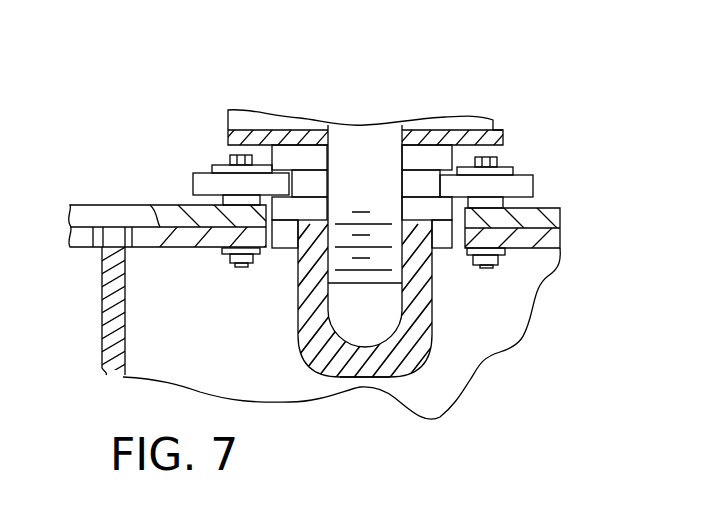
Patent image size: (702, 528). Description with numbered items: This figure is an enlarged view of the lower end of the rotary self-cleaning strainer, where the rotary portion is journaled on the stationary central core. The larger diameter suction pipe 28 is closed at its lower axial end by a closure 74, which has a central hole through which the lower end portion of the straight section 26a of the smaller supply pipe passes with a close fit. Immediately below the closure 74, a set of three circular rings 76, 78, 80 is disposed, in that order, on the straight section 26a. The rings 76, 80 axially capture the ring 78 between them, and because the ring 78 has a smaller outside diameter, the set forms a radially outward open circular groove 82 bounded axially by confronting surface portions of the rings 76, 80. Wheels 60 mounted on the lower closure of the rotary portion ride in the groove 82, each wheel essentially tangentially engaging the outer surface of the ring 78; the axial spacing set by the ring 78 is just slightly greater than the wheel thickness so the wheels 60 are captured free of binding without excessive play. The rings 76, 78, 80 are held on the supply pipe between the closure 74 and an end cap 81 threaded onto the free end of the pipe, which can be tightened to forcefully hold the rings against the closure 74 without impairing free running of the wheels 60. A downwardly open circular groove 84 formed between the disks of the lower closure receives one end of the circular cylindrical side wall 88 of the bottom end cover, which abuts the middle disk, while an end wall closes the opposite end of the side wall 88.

The suction pipe 28 is at (500, 122).
The closure 74 is at (258, 144).
The straight section 26a is at (362, 137).
The circular groove 82 is at (274, 167).
The circular ring 76 is at (430, 155).
The circular ring 78 is at (415, 183).
The wheels 60 is at (194, 184).
The circular groove 84 is at (113, 248).
The circular cylindrical side wall 88 is at (517, 300).
The circular ring 80 is at (440, 212).
The end cap 81 is at (372, 377).